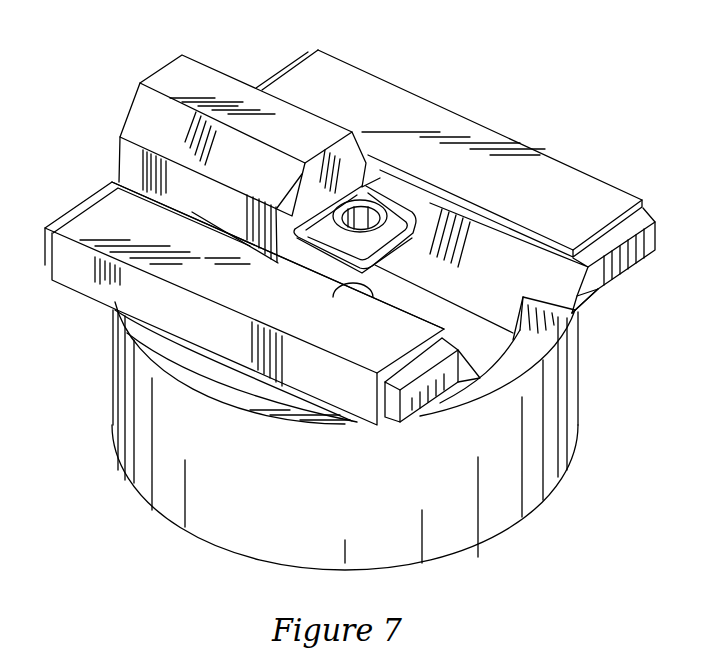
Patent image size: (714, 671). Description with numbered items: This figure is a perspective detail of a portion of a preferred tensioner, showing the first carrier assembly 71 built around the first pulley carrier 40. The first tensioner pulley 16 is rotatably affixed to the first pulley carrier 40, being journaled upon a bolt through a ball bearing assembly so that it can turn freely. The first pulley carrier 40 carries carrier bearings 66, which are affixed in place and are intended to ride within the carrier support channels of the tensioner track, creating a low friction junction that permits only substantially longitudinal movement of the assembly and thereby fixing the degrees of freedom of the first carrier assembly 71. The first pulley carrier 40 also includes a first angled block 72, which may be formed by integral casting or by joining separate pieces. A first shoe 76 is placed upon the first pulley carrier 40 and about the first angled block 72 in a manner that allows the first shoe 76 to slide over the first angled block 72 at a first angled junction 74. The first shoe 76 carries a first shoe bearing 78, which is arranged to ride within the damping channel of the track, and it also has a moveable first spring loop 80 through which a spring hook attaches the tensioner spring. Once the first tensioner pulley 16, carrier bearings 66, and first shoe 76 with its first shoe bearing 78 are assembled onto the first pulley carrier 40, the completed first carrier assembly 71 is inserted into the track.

The first tensioner pulley 16 is at (582, 355).
The first pulley carrier 40 is at (600, 290).
The carrier bearings 66 is at (573, 165).
The first carrier assembly 71 is at (575, 520).
The first angled block 72 is at (221, 221).
The first angled junction 74 is at (207, 204).
The first shoe 76 is at (188, 184).
The first shoe bearing 78 is at (133, 97).
The first moveable spring loop 80 is at (395, 207).